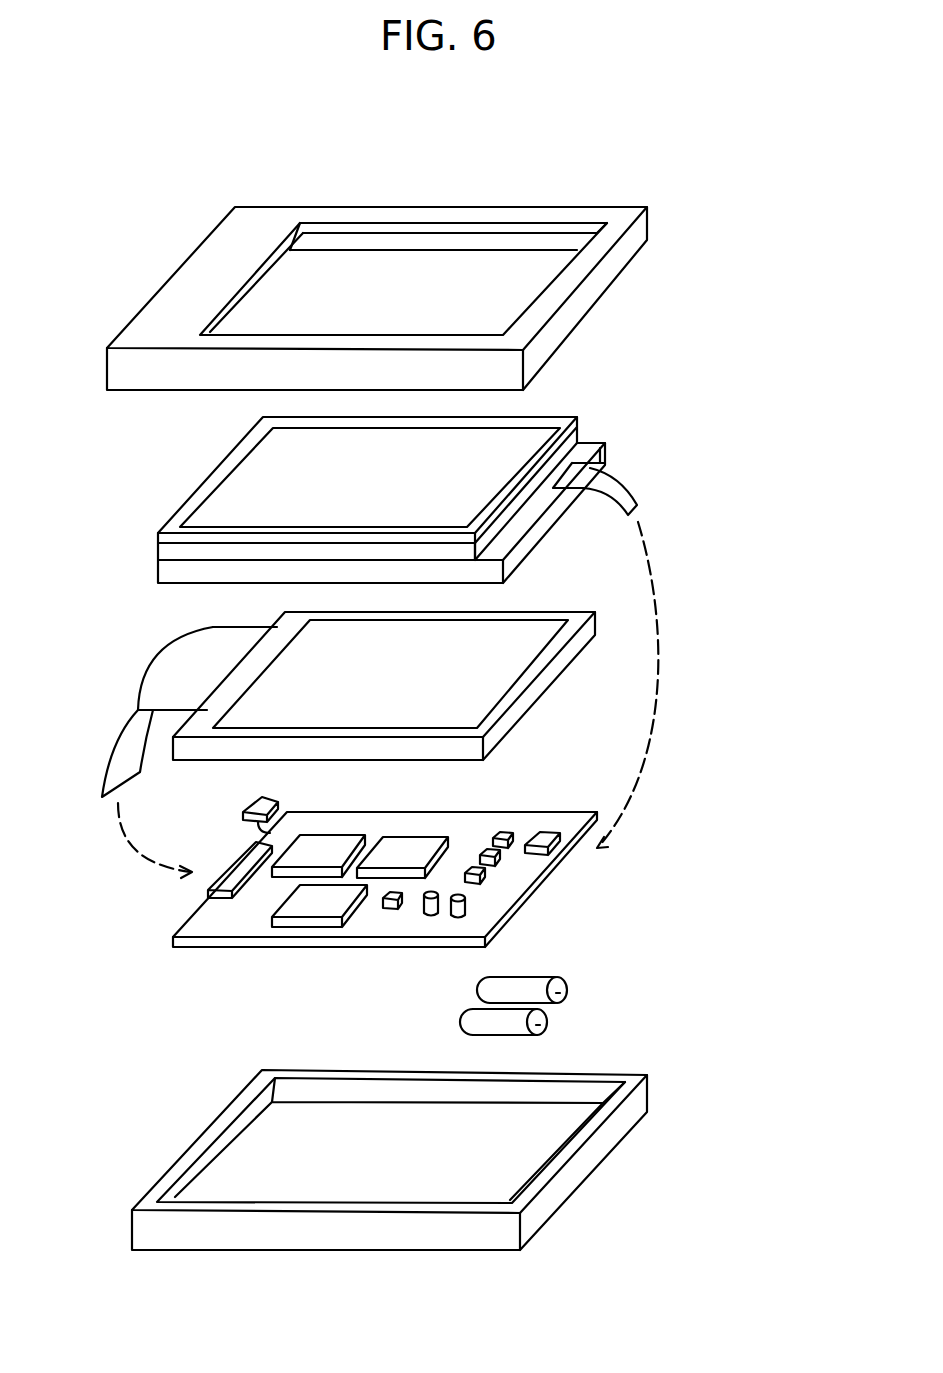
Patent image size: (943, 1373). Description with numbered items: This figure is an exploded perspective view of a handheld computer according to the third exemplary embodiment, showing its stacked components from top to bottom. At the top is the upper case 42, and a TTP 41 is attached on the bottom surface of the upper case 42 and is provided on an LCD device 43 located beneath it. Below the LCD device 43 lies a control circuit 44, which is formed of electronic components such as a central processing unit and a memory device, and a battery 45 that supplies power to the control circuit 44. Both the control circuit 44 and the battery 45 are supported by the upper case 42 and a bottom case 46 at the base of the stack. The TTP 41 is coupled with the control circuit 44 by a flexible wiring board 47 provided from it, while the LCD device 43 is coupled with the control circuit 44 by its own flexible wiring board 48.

The TTP 41 is at (603, 433).
The upper case 42 is at (197, 258).
The LCD device 43 is at (583, 642).
The control circuit 44 is at (545, 877).
The battery 45 is at (548, 1027).
The bottom case 46 is at (625, 1127).
The flexible wiring board 47 is at (637, 490).
The flexible wiring board 48 is at (175, 666).